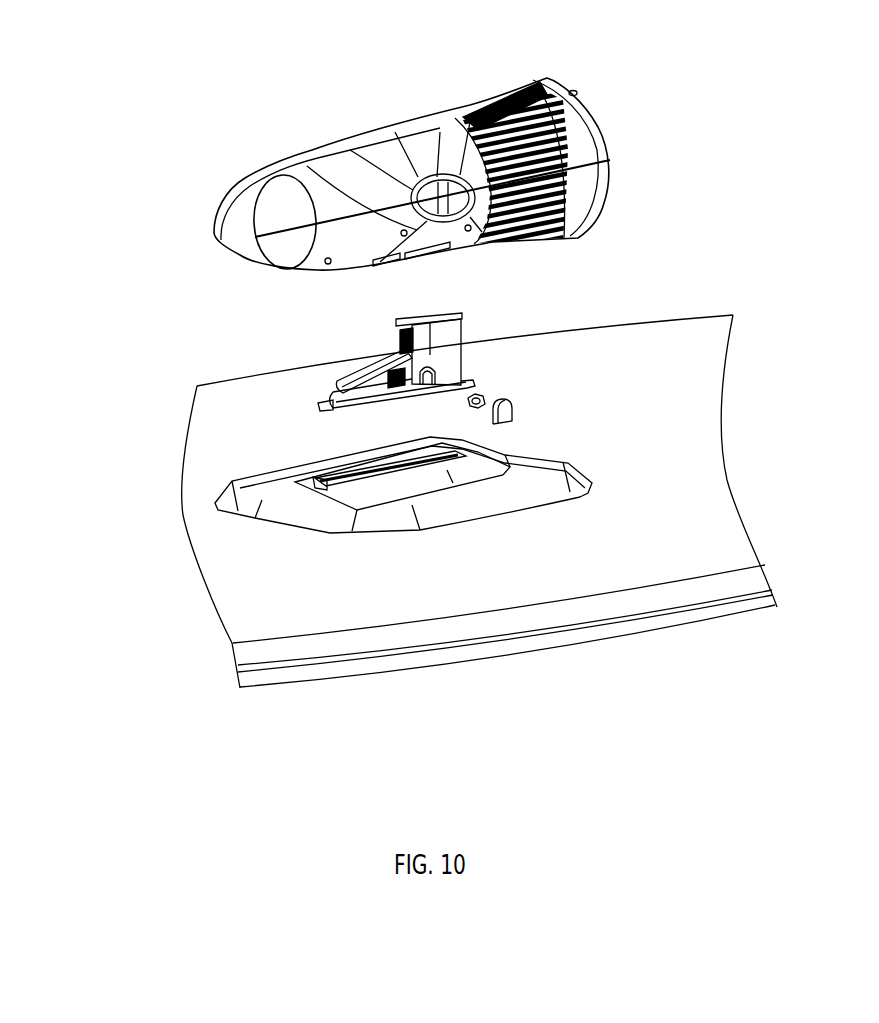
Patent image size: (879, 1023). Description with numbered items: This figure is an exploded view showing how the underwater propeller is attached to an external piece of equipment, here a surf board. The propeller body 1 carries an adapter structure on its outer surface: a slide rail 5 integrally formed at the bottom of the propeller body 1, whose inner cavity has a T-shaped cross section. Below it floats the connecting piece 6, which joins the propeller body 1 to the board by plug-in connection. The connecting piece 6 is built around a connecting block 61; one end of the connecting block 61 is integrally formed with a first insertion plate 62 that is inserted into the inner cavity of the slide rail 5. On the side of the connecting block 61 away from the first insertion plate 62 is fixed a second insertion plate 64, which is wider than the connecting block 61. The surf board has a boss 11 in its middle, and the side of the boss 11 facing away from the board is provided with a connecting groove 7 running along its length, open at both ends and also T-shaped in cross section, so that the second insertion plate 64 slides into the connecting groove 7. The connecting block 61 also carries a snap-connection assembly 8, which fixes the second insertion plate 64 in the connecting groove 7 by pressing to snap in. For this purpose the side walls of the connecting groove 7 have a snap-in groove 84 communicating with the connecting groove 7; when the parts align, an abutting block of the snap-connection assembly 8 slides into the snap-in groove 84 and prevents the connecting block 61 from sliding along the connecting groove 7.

The propeller body 1 is at (405, 132).
The slide rail 5 is at (408, 256).
The connecting piece 6 is at (379, 317).
The connecting block 61 is at (360, 380).
The first insertion plate 62 is at (463, 313).
The second insertion plate 64 is at (318, 400).
The connecting groove 7 is at (300, 487).
The snap-connection assembly 8 is at (520, 402).
The snap-in groove 84 is at (437, 460).
The boss 11 is at (232, 497).